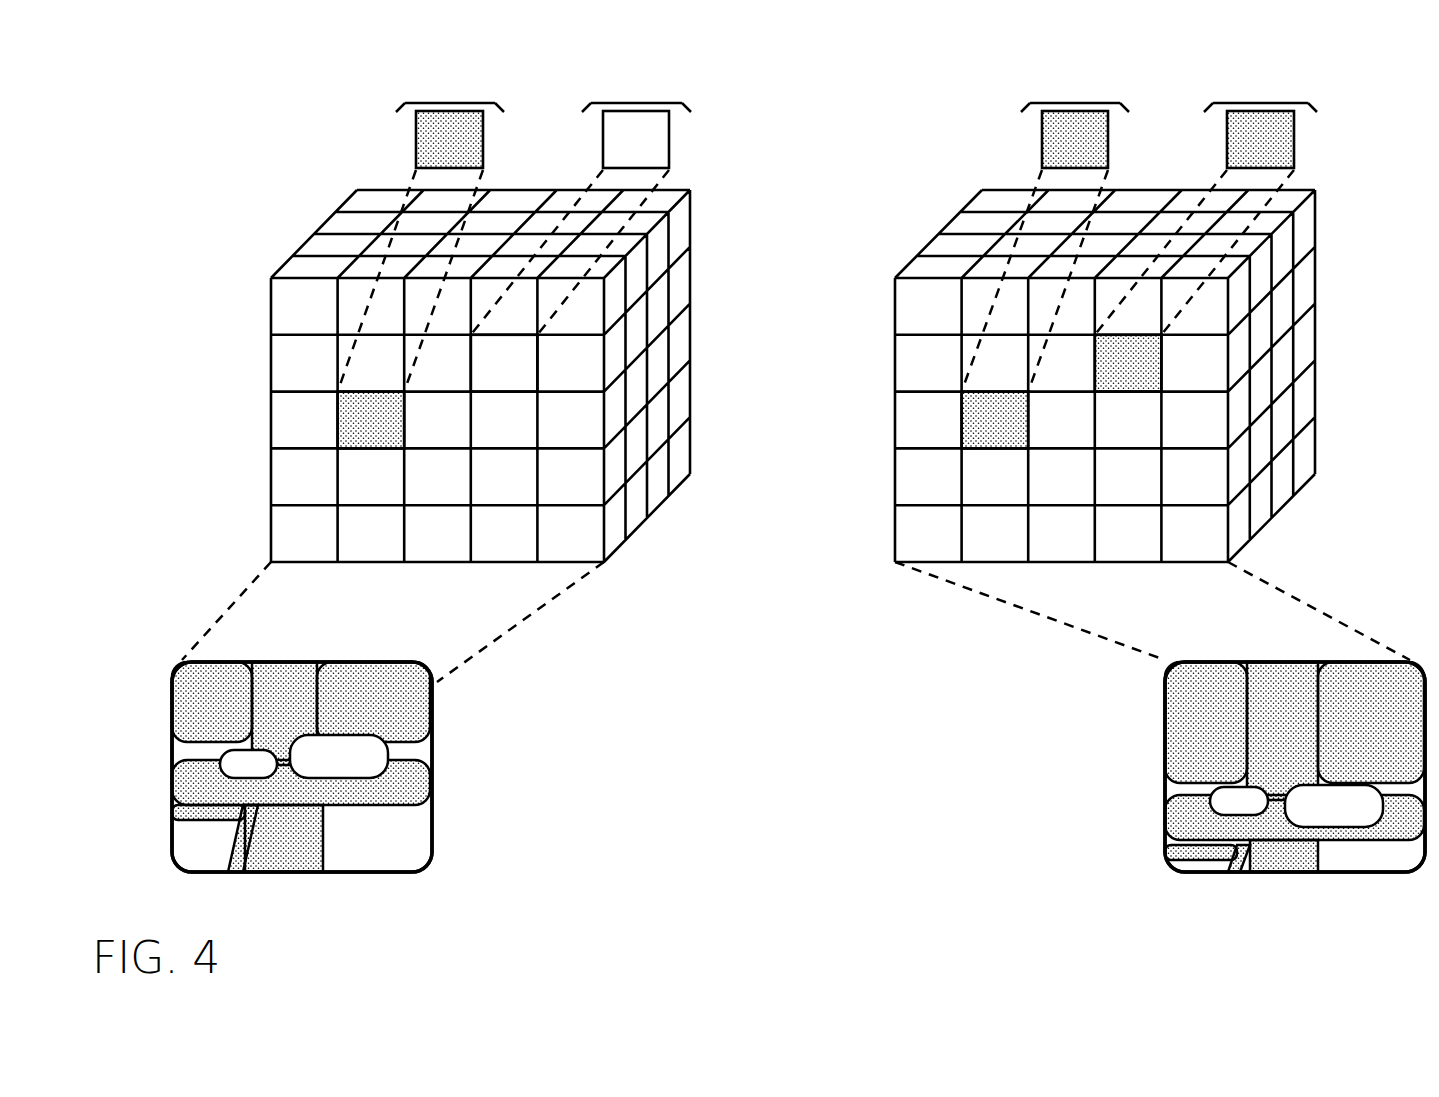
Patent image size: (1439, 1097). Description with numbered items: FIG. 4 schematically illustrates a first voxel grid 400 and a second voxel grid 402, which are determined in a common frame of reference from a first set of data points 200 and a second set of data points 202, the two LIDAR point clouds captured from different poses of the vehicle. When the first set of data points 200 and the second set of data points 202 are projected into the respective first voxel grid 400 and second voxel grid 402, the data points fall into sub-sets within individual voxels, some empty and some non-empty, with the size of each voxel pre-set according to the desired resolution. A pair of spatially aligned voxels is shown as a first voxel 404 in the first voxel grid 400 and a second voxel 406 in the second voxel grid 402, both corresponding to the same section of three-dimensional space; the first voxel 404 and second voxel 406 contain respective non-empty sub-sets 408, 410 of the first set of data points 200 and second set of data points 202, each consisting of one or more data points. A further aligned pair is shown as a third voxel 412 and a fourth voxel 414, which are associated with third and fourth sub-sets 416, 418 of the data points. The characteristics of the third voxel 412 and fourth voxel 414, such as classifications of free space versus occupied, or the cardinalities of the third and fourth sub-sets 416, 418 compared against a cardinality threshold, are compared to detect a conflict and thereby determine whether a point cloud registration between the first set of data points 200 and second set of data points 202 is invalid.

The first voxel grid 400 is at (613, 583).
The second voxel grid 402 is at (893, 583).
The first voxel 404 is at (337, 420).
The second voxel 406 is at (962, 398).
The non-empty sub-set of the first set of data points 408 is at (448, 103).
The non-empty sub-set of the second set of data points 410 is at (1075, 103).
The third voxel 412 is at (518, 365).
The fourth voxel 414 is at (1150, 372).
The third sub-set of data points 416 is at (636, 103).
The fourth sub-set of data points 418 is at (1260, 103).
The first set of data points 200 is at (432, 840).
The second set of data points 202 is at (1165, 788).